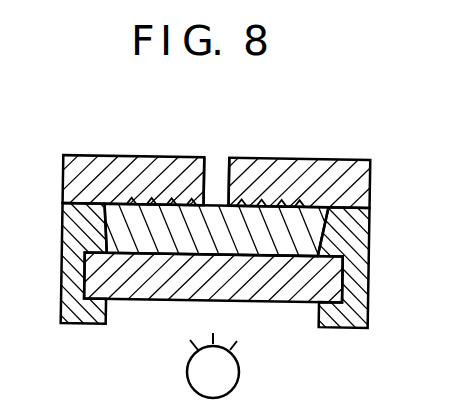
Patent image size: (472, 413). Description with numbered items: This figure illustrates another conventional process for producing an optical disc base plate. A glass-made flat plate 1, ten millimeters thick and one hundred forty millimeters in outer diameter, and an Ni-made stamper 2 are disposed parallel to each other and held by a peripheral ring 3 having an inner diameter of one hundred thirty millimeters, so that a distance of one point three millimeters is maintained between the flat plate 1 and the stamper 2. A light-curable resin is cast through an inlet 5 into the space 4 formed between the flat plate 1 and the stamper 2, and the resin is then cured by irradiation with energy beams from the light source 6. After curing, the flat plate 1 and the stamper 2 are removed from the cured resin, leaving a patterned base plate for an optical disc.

The flat plate 1 is at (282, 295).
The stamper 2 is at (357, 182).
The peripheral ring 3 is at (353, 240).
The space 4 is at (120, 233).
The inlet 5 is at (213, 172).
The light source 6 is at (187, 378).